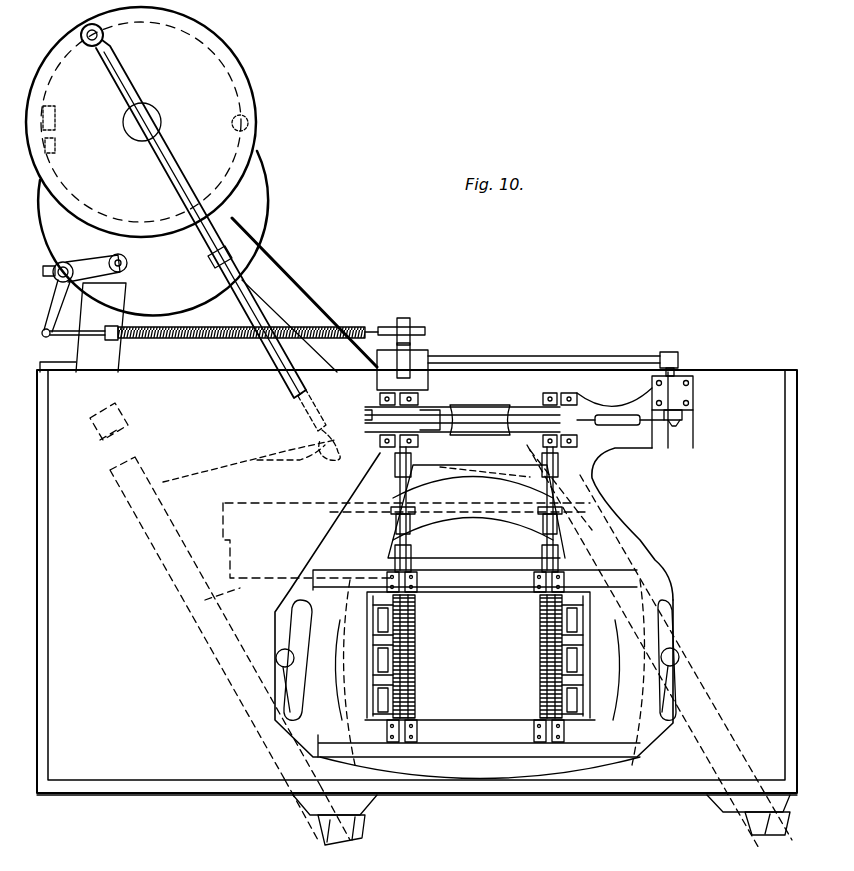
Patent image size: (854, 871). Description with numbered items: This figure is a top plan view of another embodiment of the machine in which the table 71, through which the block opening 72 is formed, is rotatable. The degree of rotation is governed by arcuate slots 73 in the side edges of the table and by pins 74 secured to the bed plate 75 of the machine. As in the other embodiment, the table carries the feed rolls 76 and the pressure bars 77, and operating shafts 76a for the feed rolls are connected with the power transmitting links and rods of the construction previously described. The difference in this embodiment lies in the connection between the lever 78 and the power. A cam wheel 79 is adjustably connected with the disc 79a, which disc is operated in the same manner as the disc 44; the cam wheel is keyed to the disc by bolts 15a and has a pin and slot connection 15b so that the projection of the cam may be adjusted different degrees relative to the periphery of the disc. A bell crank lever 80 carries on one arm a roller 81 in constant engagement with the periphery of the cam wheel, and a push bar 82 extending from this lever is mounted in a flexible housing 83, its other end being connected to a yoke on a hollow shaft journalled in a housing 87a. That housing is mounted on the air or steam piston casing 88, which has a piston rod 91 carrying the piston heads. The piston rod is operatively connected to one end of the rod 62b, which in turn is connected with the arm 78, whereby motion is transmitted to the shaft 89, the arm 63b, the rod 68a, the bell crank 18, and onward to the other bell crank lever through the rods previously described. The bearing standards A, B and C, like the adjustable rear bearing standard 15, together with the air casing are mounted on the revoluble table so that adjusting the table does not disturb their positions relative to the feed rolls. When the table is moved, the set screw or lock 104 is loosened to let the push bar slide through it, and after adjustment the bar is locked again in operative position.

The bearing standard 15 is at (155, 114).
The bolts 15a is at (56, 113).
The pin and slot connection 15b is at (56, 147).
The disc 44 is at (198, 142).
The cam wheel 79 is at (248, 188).
The disc wheel 79a is at (230, 103).
The set screw or lock 104 is at (45, 330).
The roller 81 is at (128, 270).
The bell crank lever 80 is at (57, 298).
The push bar 82 is at (90, 338).
The flexible housing 83 is at (178, 338).
The housing 87a is at (400, 356).
The air or steam piston casing 88 is at (420, 345).
The piston rod 91 is at (430, 361).
The bearing standard C is at (432, 395).
The bearing standard B is at (556, 395).
The bell crank 18 is at (570, 393).
The rod 62b is at (600, 358).
The lever 78 is at (682, 363).
The shaft 89 is at (685, 372).
The bearing standard A is at (693, 395).
The rod 68a is at (615, 417).
The arm 63b is at (690, 418).
The operating shafts 76a is at (395, 505).
The feed rolls 76 is at (540, 610).
The block opening 72 is at (480, 649).
The pressure bars 77 is at (540, 675).
The arcuate slots 73 is at (292, 620).
The pins 74 is at (283, 660).
The bed plate 75 is at (145, 570).
The table 71 is at (655, 733).